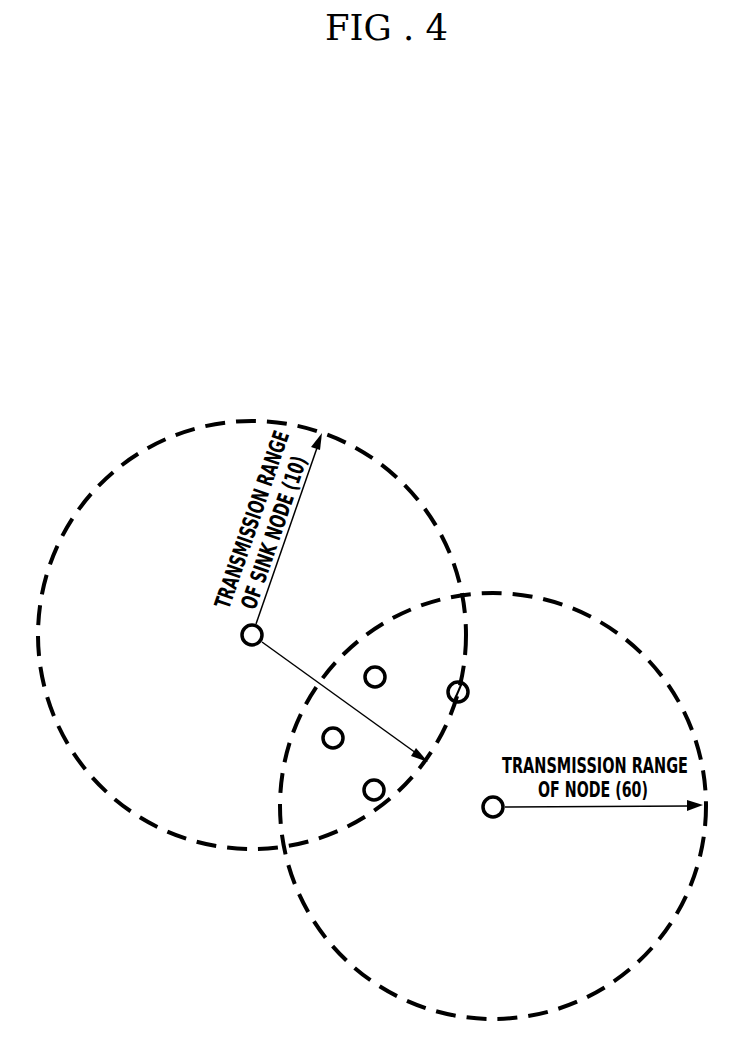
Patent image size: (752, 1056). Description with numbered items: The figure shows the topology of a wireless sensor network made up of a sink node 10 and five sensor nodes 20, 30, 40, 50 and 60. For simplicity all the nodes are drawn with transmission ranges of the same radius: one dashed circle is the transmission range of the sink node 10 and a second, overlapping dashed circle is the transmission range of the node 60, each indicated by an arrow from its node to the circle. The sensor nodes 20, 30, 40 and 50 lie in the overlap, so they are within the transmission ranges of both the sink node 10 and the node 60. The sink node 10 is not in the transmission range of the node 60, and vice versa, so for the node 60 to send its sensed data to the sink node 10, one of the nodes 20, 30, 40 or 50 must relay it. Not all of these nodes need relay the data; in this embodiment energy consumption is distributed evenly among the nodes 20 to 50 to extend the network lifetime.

The sink node 10 is at (242, 634).
The sensor node 20 is at (375, 667).
The sensor node 30 is at (332, 749).
The sensor node 40 is at (377, 800).
The sensor node 50 is at (468, 690).
The sensor node 60 is at (494, 818).